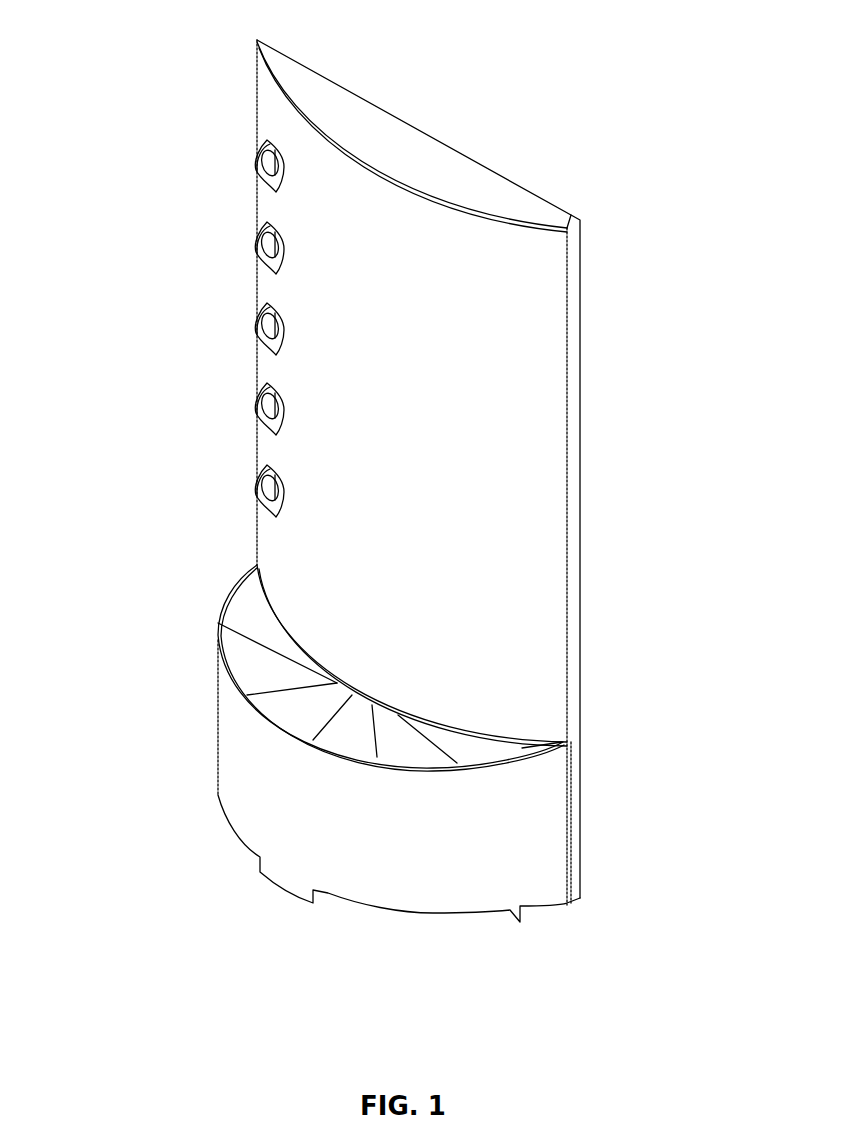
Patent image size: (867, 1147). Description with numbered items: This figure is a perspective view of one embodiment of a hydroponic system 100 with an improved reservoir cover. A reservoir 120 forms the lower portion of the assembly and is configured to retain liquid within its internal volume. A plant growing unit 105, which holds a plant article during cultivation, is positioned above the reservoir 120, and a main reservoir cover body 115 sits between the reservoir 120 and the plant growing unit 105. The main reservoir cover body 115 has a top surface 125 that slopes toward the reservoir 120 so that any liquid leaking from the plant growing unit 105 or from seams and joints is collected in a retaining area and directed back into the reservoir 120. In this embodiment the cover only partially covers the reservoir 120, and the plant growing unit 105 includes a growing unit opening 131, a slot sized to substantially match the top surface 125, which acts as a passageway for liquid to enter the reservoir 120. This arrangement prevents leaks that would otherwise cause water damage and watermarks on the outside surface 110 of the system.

The hydroponic system 100 is at (185, 88).
The plant growing unit 105 is at (266, 511).
The outside surface 110 is at (525, 500).
The main reservoir cover body 115 is at (238, 702).
The reservoir 120 is at (535, 827).
The top surface 125 is at (526, 741).
The growing unit opening 131 is at (413, 707).